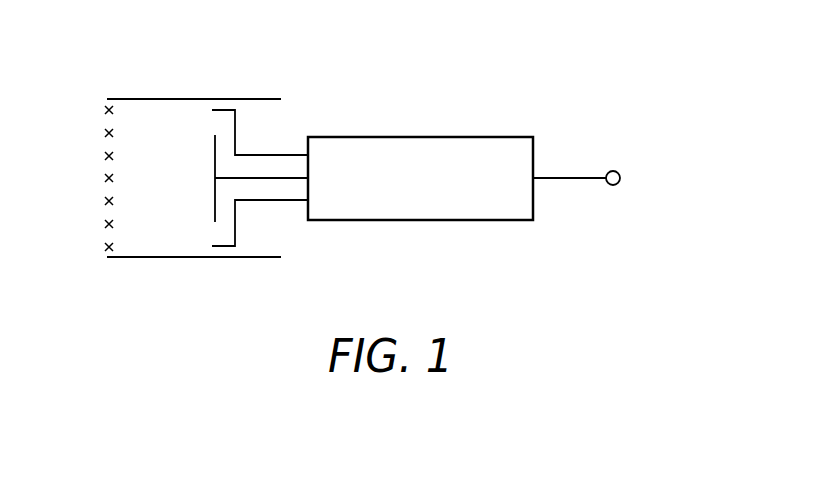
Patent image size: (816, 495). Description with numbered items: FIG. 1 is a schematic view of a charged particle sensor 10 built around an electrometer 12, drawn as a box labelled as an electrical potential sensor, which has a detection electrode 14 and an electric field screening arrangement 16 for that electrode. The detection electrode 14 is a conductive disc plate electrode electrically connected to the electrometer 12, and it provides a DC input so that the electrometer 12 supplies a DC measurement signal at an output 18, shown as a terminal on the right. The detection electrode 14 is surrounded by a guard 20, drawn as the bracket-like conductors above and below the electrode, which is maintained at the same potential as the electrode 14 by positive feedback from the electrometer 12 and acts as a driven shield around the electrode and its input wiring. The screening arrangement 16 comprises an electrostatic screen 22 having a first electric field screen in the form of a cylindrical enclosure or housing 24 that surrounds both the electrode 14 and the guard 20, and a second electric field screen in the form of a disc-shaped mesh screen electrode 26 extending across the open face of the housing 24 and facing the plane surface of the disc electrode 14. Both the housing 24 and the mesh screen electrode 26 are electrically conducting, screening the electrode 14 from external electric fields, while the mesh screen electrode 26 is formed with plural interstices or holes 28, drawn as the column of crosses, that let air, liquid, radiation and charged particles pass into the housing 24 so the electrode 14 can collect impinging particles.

The charged particle sensor 10 is at (564, 247).
The electrometer 12 is at (508, 136).
The detection electrode 14 is at (214, 148).
The electric field screening arrangement 16 is at (90, 73).
The output 18 is at (612, 170).
The guard 20 is at (238, 122).
The electrostatic screen 22 is at (267, 275).
The cylindrical enclosure or housing 24 is at (140, 259).
The mesh screen electrode 26 is at (105, 201).
The interstices or holes 28 is at (105, 133).